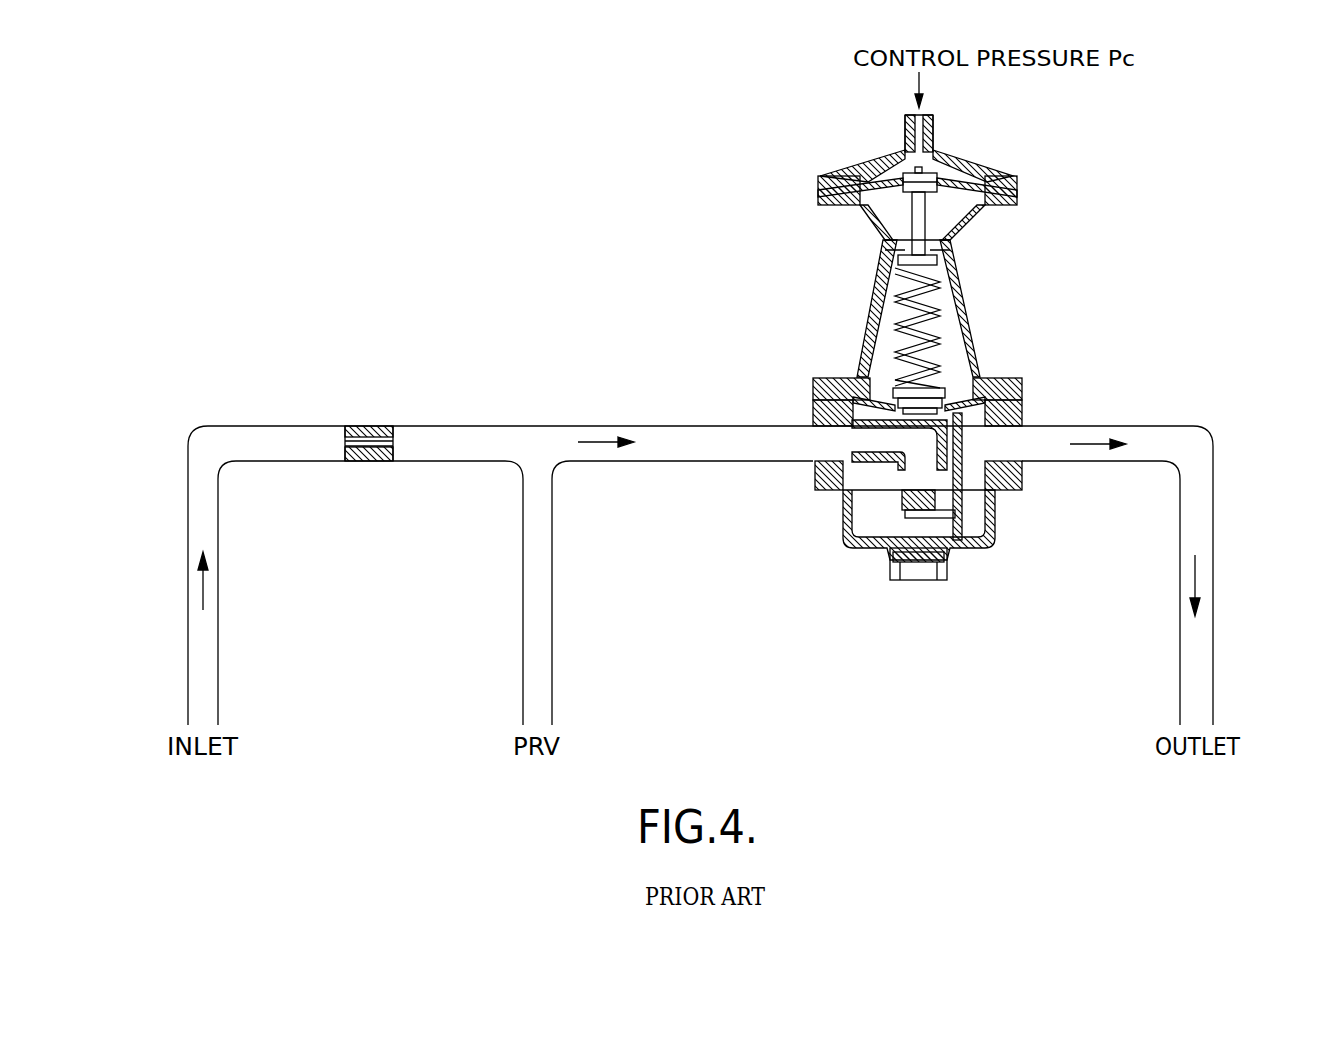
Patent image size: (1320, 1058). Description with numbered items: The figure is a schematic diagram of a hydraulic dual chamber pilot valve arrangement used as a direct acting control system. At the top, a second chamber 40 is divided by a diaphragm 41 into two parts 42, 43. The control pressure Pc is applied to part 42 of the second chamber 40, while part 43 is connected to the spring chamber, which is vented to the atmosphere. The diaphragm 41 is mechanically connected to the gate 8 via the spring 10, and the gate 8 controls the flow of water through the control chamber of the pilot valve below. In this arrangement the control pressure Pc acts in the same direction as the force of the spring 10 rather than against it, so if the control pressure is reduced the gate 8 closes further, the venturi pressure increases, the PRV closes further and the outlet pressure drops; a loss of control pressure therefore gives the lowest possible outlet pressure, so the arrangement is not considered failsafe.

The second chamber 40 is at (966, 137).
The part of the second chamber 42 is at (955, 178).
The diaphragm 41 is at (945, 203).
The part of the second chamber 43 is at (963, 222).
The spring 10 is at (893, 320).
The gate mechanism 8 is at (953, 512).